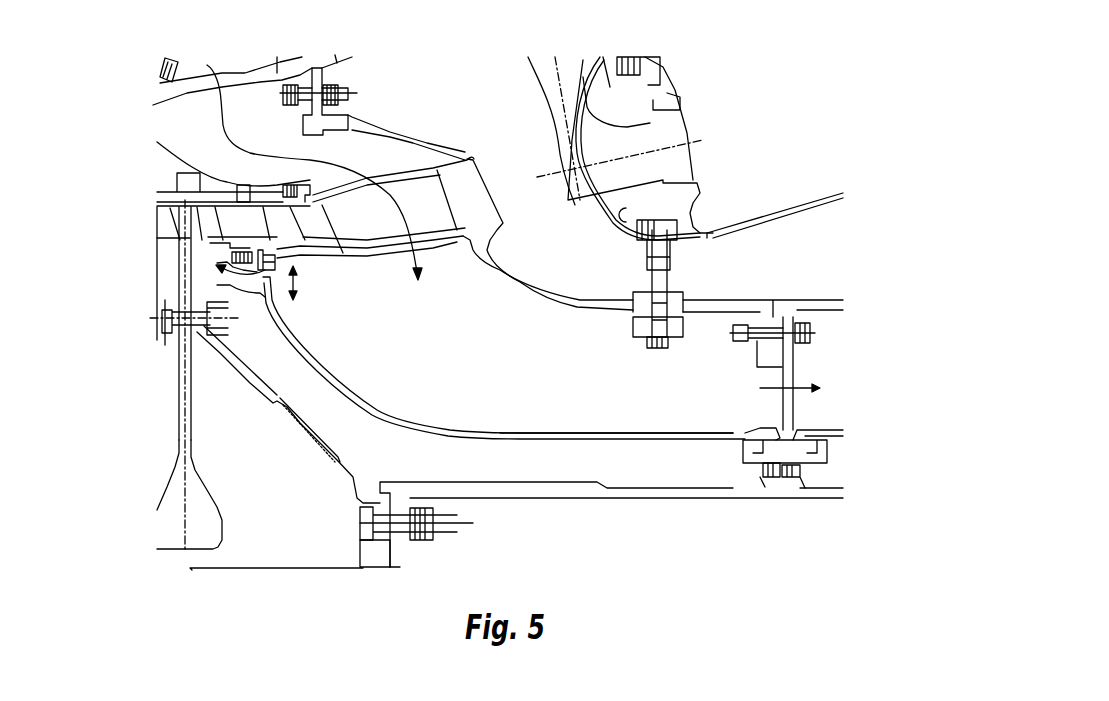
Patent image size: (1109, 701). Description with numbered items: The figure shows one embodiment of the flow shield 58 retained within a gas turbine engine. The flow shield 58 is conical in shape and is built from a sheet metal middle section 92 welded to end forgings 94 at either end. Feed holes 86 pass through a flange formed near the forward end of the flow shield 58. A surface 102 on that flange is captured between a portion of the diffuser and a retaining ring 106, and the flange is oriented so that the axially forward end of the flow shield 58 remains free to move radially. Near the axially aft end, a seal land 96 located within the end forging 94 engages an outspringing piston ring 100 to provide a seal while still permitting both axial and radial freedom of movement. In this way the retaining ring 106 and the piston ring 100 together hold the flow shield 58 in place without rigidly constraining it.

The flow shield 58 is at (370, 413).
The feed holes 86 is at (270, 287).
The sheet metal middle section 92 is at (520, 430).
The end forgings 94 is at (287, 318).
The seal land 96 is at (780, 480).
The outspringing piston ring 100 is at (747, 463).
The surface 102 is at (300, 262).
The retaining ring 106 is at (237, 275).